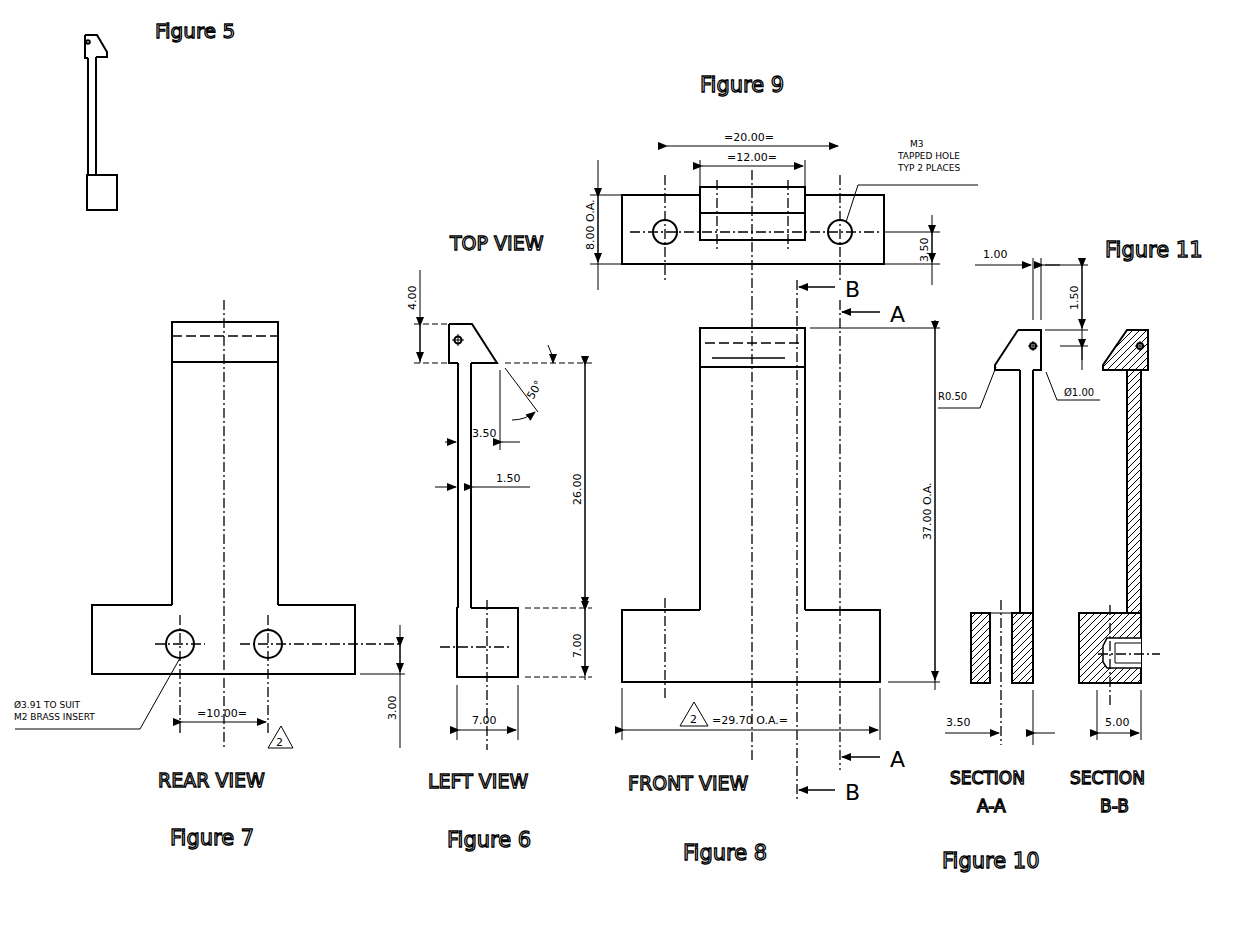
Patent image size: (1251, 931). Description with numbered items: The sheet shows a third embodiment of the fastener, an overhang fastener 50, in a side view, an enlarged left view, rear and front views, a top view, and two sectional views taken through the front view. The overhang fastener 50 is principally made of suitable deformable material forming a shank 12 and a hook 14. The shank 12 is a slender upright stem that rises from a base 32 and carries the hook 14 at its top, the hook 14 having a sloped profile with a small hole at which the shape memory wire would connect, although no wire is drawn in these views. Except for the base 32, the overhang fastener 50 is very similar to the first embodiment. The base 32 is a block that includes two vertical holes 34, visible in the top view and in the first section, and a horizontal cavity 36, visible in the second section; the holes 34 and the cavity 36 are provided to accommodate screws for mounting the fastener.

In FIG. 5, the shank 12 is at (88, 116).
In FIG. 7, the shank 12 is at (172, 474).
In FIG. 6, the shank 12 is at (456, 519).
In FIG. 8, the shank 12 is at (702, 473).
In FIG. 10, the shank 12 is at (1035, 478).
In FIG. 11, the shank 12 is at (1142, 458).
In FIG. 5, the hook 14 is at (96, 46).
In FIG. 7, the hook 14 is at (172, 343).
In FIG. 6, the hook 14 is at (483, 342).
In FIG. 9, the hook 14 is at (790, 196).
In FIG. 8, the hook 14 is at (712, 343).
In FIG. 10, the hook 14 is at (1018, 350).
In FIG. 11, the hook 14 is at (1150, 356).
In FIG. 5, the base 32 is at (99, 192).
In FIG. 7, the base 32 is at (118, 627).
In FIG. 6, the base 32 is at (502, 665).
In FIG. 9, the base 32 is at (753, 229).
In FIG. 8, the base 32 is at (660, 608).
In FIG. 10, the base 32 is at (972, 613).
In FIG. 11, the base 32 is at (1086, 612).
In FIG. 9, the vertical holes 34 is at (660, 227).
In FIG. 10, the vertical holes 34 is at (1000, 630).
In FIG. 11, the horizontal cavity 36 is at (1125, 652).
In FIG. 5, the overhang fastener 50 is at (129, 138).
In FIG. 7, the overhang fastener 50 is at (192, 493).